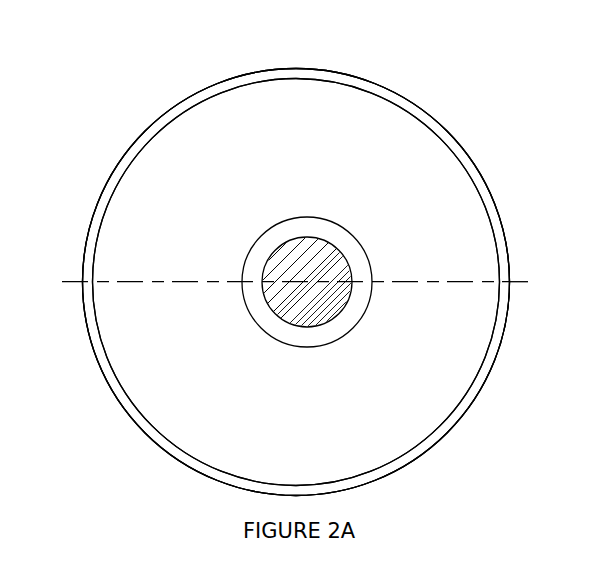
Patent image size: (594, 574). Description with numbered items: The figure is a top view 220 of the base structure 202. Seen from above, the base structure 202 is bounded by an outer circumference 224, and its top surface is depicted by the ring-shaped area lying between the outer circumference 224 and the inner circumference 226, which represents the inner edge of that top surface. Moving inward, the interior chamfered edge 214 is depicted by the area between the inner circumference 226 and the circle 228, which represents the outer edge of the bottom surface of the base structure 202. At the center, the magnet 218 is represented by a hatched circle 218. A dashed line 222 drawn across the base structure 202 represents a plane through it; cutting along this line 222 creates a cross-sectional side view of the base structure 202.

The base structure 202 is at (462, 116).
The interior chamfered edge 214 is at (462, 352).
The magnet 218 is at (350, 270).
The top view 220 is at (296, 282).
The line 222 is at (320, 282).
The outer circumference 224 is at (490, 192).
The inner circumference 226 is at (499, 231).
The circle 228 is at (356, 239).